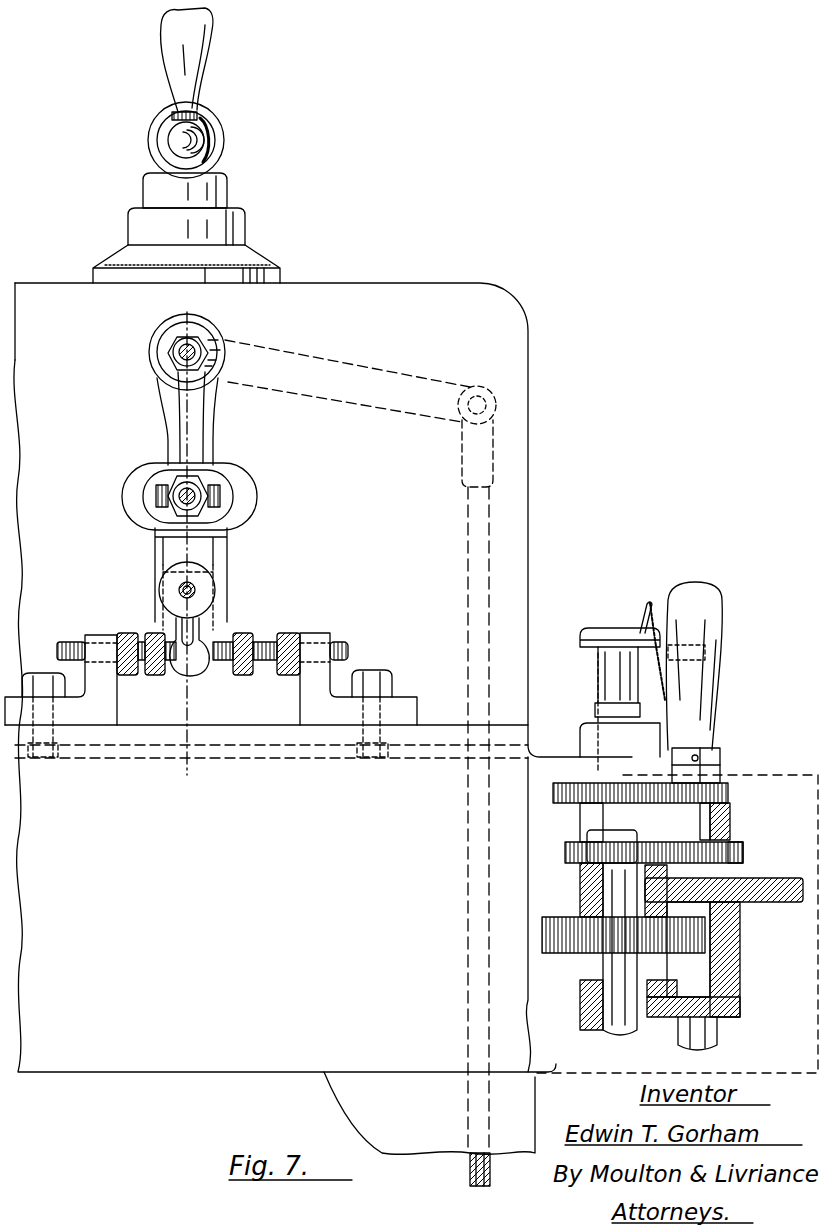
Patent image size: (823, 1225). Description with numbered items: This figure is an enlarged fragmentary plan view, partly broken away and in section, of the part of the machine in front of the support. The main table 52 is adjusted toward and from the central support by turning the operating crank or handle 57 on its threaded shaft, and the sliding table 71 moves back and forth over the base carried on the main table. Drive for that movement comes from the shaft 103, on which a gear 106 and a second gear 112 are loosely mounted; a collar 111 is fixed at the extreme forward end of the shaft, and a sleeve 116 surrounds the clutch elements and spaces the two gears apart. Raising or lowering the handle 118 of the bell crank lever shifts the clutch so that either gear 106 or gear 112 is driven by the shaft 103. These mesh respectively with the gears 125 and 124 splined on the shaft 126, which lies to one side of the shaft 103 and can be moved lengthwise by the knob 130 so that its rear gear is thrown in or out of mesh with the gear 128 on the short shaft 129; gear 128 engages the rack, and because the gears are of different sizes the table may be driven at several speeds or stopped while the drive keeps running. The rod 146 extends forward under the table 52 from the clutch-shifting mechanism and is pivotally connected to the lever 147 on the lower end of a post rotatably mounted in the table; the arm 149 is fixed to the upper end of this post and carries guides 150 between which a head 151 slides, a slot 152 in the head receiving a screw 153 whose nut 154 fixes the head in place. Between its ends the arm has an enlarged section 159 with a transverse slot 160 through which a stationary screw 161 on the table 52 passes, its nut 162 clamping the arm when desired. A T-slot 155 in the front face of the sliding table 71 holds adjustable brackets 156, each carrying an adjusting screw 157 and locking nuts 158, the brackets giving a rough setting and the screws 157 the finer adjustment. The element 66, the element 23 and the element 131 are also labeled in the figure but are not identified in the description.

The operating crank or handle 57 is at (210, 137).
The base flange 66 is at (252, 258).
The main table 52 is at (512, 470).
The sliding table 71 is at (174, 1045).
The section line 23 is at (199, 303).
The arm 149 is at (182, 415).
The lever 147 is at (378, 400).
The rod 146 is at (472, 1169).
The transverse slot 160 is at (160, 500).
The enlarged section 159 is at (236, 508).
The nut 162 is at (200, 488).
The stationary screw 161 is at (166, 506).
The guides 150 is at (228, 560).
The nut 154 is at (212, 588).
The screw 153 is at (180, 590).
The head 151 is at (196, 667).
The slot 152 is at (200, 640).
The adjusting screw 157 is at (70, 645).
The locking nuts 158 is at (126, 676).
The brackets 156 is at (103, 703).
The T-slot 155 is at (78, 755).
The knob 130 is at (602, 635).
The shaft 126 is at (602, 688).
The handle 118 is at (720, 683).
The gear 124 is at (567, 780).
The collar 111 is at (720, 755).
The second gear 112 is at (733, 790).
The sleeve 116 is at (728, 815).
The gear 125 is at (573, 853).
The gear 106 is at (742, 853).
The frame 131 is at (730, 905).
The gear 128 is at (555, 915).
The short shaft 129 is at (613, 1003).
The shaft 103 is at (717, 1033).